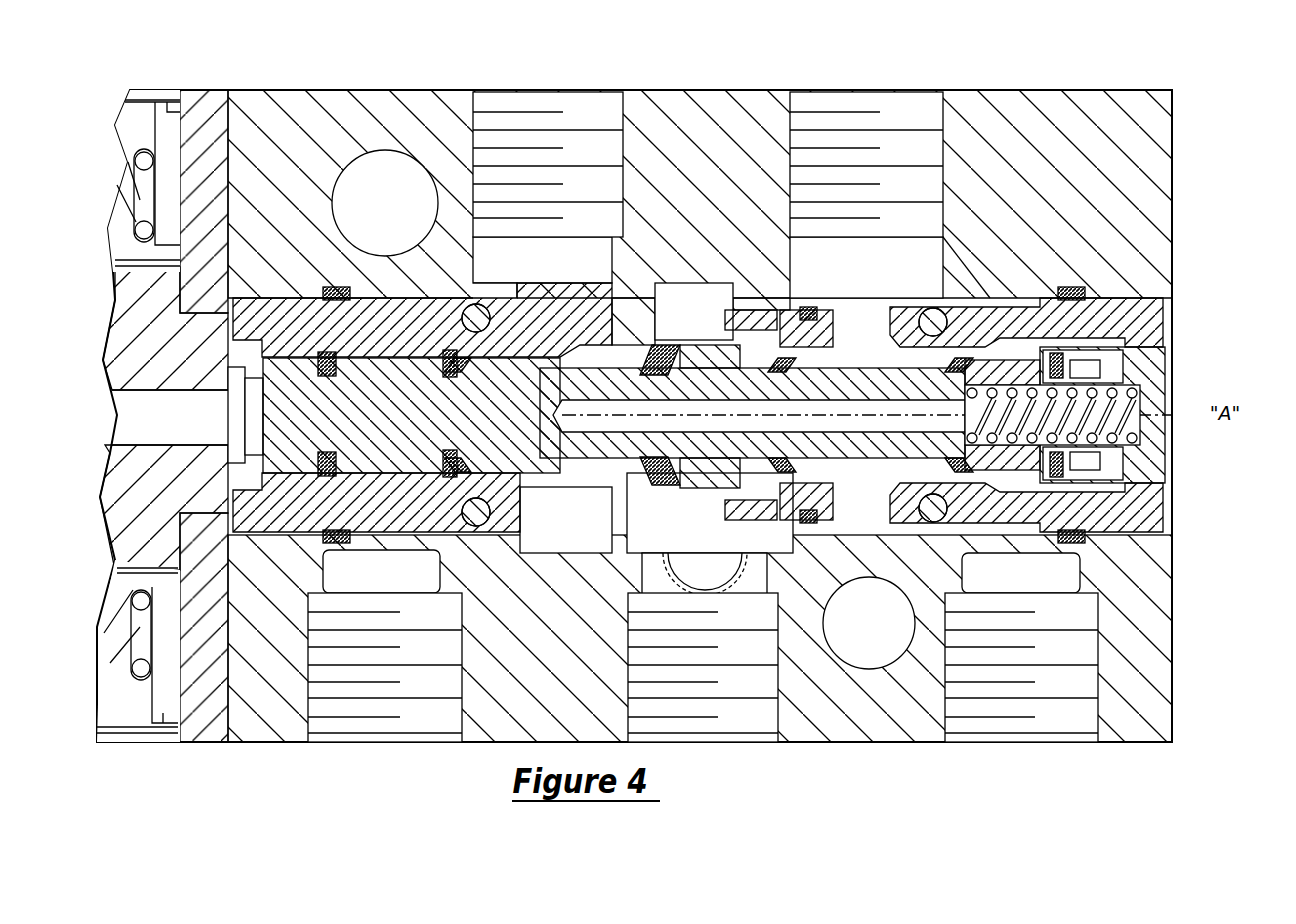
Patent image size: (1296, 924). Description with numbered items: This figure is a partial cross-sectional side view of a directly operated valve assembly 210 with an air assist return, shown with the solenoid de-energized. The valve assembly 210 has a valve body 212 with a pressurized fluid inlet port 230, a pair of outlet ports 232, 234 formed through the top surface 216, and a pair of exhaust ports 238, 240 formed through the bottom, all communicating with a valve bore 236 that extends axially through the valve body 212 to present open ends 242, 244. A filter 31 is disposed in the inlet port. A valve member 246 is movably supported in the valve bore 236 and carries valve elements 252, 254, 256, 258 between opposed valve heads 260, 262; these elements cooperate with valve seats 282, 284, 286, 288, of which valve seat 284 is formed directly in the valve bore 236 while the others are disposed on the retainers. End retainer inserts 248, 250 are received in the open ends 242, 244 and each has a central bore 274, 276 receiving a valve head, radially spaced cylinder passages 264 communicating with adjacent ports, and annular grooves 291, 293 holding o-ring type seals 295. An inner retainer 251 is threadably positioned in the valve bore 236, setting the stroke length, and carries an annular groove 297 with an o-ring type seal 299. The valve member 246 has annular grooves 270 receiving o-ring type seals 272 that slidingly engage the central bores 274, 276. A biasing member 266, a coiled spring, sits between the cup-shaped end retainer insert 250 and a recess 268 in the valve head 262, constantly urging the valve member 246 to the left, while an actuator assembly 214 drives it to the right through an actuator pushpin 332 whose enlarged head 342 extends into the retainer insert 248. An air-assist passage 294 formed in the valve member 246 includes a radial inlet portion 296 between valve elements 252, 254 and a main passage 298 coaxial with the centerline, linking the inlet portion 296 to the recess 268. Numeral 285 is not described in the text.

The directly operated valve assembly 210 is at (1039, 72).
The valve body 212 is at (1125, 90).
The actuator assembly 214 is at (200, 100).
The top surface 216 is at (715, 105).
The pressurized fluid inlet port 230 is at (740, 725).
The outlet port 232 is at (568, 108).
The outlet port 234 is at (888, 108).
The valve bore 236 is at (580, 455).
The exhaust port 238 is at (410, 725).
The exhaust port 240 is at (1055, 725).
The open end 242 is at (210, 308).
The open end 244 is at (1172, 298).
The valve member 246 is at (545, 490).
The end retainer insert 248 is at (260, 320).
The end retainer insert 250 is at (1160, 320).
The inner retainer 251 is at (845, 525).
The valve element 252 is at (452, 450).
The valve element 254 is at (655, 318).
The valve element 256 is at (745, 318).
The valve element 258 is at (1025, 330).
The valve head 260 is at (190, 470).
The valve head 262 is at (1145, 470).
The cylinder passage 264 is at (360, 293).
The biasing member 266 is at (1160, 392).
The recess 268 is at (1063, 462).
The annular groove 270 is at (335, 378).
The o-ring type seal 272 is at (335, 455).
The central bore opening 274 is at (365, 347).
The central bore opening 276 is at (1060, 350).
The valve seat 282 is at (465, 362).
The valve seat 284 is at (645, 360).
The seal pocket 285 is at (930, 315).
The valve seat 286 is at (792, 366).
The valve seat 288 is at (955, 366).
The annular groove 291 is at (470, 300).
The annular groove 293 is at (950, 310).
The air-assist passage 294 is at (873, 449).
The o-ring type seal 295 is at (500, 305).
The inlet portion 296 is at (575, 380).
The annular groove 297 is at (820, 300).
The main passage 298 is at (728, 425).
The o-ring type seal 299 is at (818, 312).
The filter 31 is at (745, 592).
The actuator pushpin 332 is at (128, 428).
The enlarged head 342 is at (240, 404).